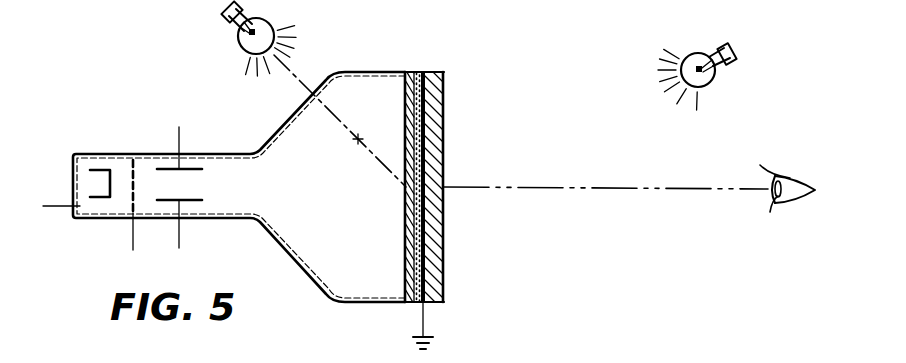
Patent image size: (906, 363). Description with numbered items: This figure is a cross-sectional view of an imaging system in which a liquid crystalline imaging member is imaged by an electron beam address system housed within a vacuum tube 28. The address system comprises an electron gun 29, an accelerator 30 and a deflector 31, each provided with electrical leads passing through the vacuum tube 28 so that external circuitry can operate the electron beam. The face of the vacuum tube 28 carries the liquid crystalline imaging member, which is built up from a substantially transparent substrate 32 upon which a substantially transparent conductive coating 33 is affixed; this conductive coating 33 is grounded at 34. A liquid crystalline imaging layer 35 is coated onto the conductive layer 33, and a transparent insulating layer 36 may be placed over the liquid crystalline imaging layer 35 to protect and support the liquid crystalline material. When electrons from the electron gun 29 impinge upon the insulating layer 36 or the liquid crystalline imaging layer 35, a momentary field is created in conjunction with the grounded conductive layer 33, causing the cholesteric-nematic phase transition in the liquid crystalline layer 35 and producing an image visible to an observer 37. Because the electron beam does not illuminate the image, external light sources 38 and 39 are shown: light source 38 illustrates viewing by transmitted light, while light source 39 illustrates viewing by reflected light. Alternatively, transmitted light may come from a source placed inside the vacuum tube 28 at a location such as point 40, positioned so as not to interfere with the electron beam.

The vacuum tube 28 is at (305, 271).
The electron gun 29 is at (100, 199).
The accelerator 30 is at (130, 209).
The deflector 31 is at (186, 203).
The substantially transparent substrate 32 is at (444, 72).
The substantially transparent conductive coating 33 is at (428, 72).
The ground 34 is at (425, 322).
The liquid crystalline imaging layer 35 is at (418, 72).
The transparent insulating layer 36 is at (409, 72).
The observer 37 is at (785, 178).
The light source 38 is at (228, 20).
The light source 39 is at (716, 80).
The point 40 is at (376, 127).